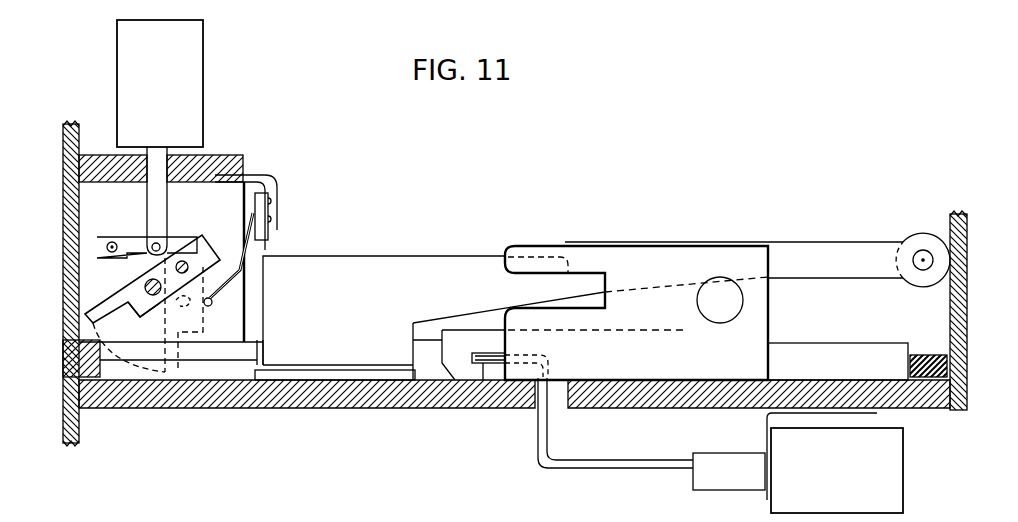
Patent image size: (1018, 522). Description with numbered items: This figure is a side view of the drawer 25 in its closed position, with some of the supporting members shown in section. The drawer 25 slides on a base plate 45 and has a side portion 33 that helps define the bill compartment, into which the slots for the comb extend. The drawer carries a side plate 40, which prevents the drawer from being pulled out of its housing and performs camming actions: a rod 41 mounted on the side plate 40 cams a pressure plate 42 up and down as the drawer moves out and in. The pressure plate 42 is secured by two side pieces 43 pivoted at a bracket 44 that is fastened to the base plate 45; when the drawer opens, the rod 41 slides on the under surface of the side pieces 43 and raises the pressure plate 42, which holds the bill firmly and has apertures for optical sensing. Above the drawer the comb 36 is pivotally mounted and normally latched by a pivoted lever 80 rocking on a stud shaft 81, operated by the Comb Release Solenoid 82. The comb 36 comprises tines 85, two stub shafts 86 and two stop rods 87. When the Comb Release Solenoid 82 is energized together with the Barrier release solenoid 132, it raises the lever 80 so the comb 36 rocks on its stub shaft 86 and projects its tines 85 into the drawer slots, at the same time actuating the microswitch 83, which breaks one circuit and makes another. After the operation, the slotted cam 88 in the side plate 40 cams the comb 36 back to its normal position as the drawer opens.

The drawer 25 is at (214, 372).
The side portion 33 is at (70, 357).
The comb 36 is at (148, 318).
The side plate 40 is at (652, 253).
The rod 41 is at (745, 303).
The pressure plate 42 is at (370, 370).
The side piece 43 is at (402, 260).
The bracket 44 is at (962, 290).
The base plate 45 is at (132, 402).
The pivoted lever 80 is at (182, 240).
The stud shaft 81 is at (113, 243).
The Comb Release Solenoid 82 is at (200, 63).
The microswitch 83 is at (262, 220).
The tines 85 is at (88, 310).
The stub shaft 86 is at (188, 266).
The stop rod 87 is at (149, 285).
The slotted cam 88 is at (545, 307).
The Barrier release solenoid 132 is at (897, 481).